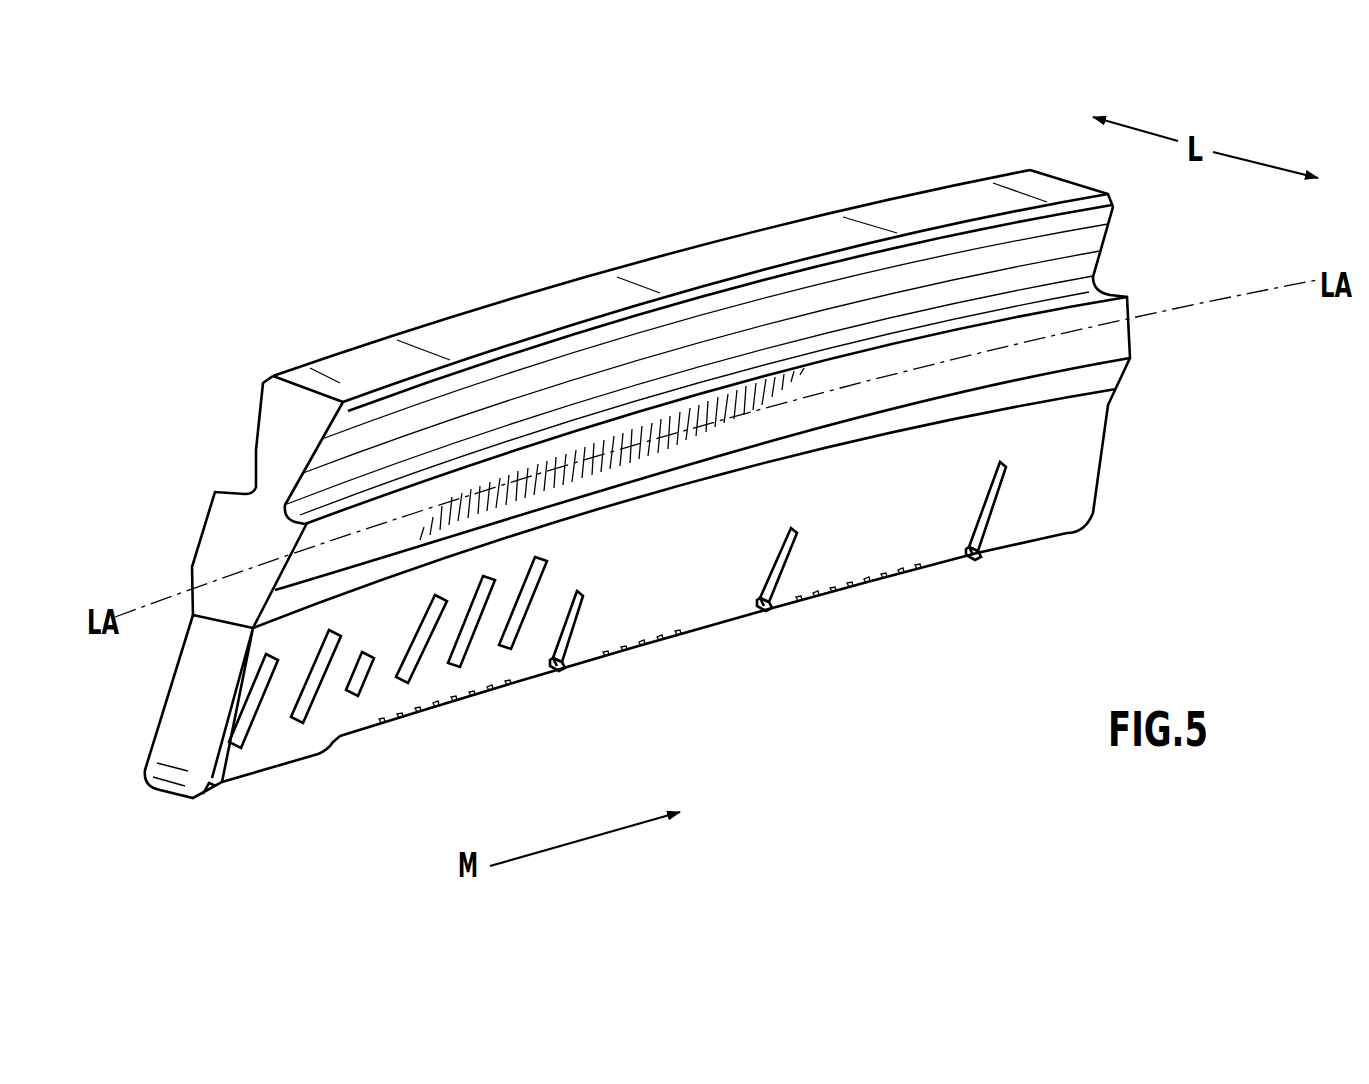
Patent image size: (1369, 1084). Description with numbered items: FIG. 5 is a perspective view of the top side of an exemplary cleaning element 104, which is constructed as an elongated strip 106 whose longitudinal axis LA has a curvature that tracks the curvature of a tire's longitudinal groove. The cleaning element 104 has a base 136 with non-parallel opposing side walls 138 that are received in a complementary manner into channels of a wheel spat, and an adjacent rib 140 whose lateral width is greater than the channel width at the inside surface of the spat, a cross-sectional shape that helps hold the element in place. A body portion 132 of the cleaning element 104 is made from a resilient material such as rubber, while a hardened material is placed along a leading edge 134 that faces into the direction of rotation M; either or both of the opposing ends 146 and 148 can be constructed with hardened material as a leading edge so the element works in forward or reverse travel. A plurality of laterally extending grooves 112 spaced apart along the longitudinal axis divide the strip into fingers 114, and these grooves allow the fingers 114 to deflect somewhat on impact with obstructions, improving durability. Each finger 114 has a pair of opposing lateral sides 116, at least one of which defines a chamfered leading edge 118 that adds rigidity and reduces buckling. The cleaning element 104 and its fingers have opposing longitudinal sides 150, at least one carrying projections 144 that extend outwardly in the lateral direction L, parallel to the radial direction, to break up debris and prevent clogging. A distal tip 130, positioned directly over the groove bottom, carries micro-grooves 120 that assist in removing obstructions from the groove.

The cleaning element 104 is at (692, 190).
The elongated strip 106 is at (1083, 245).
The laterally extending grooves 112 is at (764, 618).
The fingers 114 is at (1073, 507).
The lateral sides 116 is at (768, 558).
The chamfered leading edge 118 is at (997, 538).
The micro-grooves 120 is at (928, 561).
The distal tip 130 is at (689, 650).
The body portion 132 is at (770, 420).
The leading edge 134 is at (180, 729).
The base 136 is at (275, 407).
The side walls 138 is at (258, 432).
The rib 140 is at (215, 542).
The projections 144 is at (463, 662).
The end 146 is at (282, 345).
The end 148 is at (1030, 160).
The longitudinal sides 150 is at (247, 656).